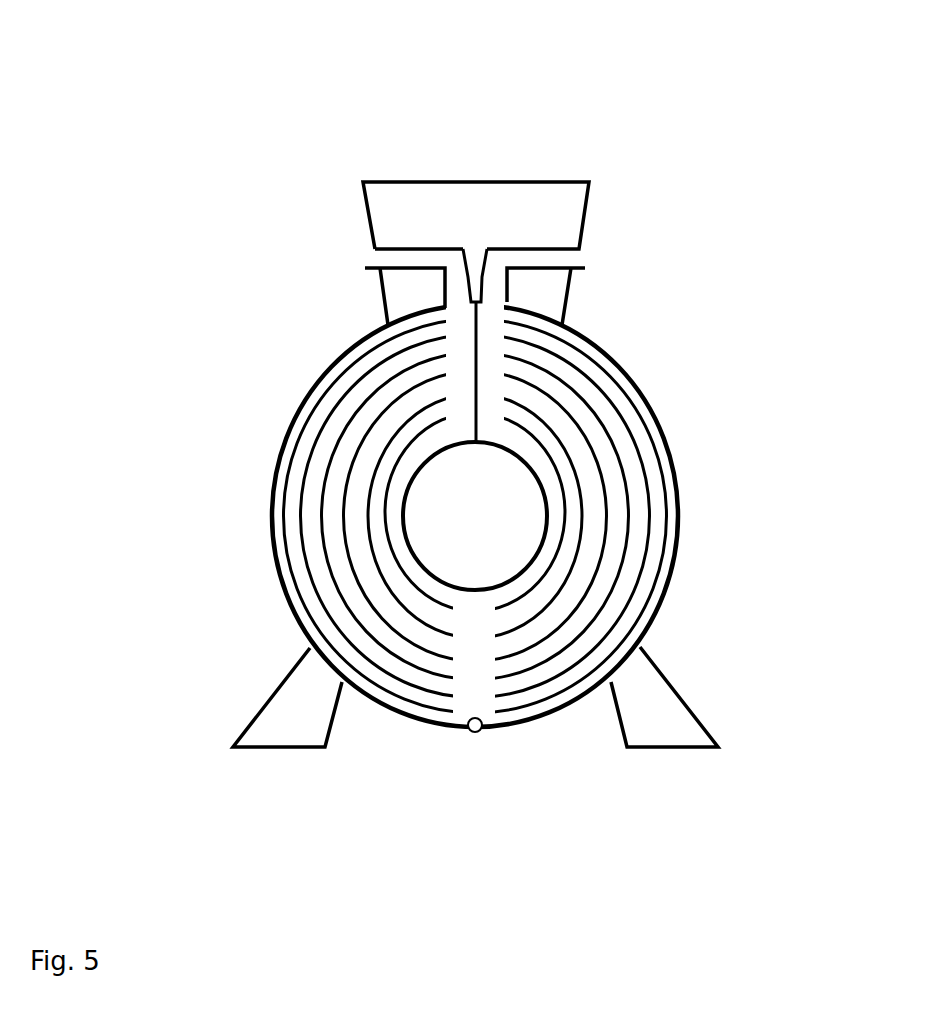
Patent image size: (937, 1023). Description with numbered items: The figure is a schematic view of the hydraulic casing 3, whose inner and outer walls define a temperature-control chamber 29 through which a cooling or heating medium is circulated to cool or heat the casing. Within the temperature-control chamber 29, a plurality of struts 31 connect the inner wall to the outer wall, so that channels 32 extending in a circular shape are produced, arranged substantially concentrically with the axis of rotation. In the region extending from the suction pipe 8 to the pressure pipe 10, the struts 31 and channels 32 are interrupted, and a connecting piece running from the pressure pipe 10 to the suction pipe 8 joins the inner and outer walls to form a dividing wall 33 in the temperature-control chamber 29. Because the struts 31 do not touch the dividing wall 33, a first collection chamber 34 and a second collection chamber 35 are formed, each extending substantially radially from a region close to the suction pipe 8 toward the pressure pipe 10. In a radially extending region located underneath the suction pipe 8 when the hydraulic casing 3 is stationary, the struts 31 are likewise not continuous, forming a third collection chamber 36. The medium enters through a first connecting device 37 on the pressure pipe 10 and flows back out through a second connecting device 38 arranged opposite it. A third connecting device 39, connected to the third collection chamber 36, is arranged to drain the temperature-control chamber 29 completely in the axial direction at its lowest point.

The hydraulic casing 3 is at (198, 162).
The suction pipe 8 is at (428, 573).
The pressure pipe 10 is at (440, 202).
The temperature-control chamber 29 is at (623, 383).
The struts 31 is at (580, 367).
The channels 32 is at (533, 680).
The dividing wall 33 is at (473, 390).
The first collection chamber 34 is at (464, 347).
The second collection chamber 35 is at (492, 310).
The third collection chamber 36 is at (477, 688).
The first connecting device 37 is at (370, 258).
The second connecting device 38 is at (578, 258).
The third connecting device 39 is at (474, 732).